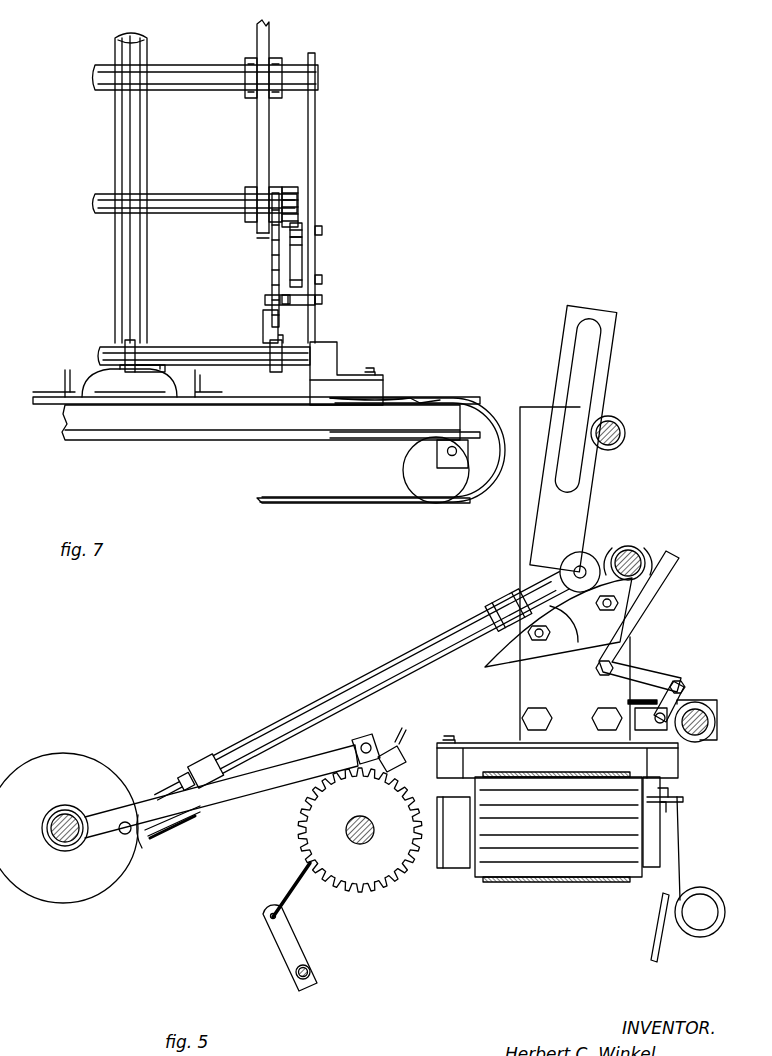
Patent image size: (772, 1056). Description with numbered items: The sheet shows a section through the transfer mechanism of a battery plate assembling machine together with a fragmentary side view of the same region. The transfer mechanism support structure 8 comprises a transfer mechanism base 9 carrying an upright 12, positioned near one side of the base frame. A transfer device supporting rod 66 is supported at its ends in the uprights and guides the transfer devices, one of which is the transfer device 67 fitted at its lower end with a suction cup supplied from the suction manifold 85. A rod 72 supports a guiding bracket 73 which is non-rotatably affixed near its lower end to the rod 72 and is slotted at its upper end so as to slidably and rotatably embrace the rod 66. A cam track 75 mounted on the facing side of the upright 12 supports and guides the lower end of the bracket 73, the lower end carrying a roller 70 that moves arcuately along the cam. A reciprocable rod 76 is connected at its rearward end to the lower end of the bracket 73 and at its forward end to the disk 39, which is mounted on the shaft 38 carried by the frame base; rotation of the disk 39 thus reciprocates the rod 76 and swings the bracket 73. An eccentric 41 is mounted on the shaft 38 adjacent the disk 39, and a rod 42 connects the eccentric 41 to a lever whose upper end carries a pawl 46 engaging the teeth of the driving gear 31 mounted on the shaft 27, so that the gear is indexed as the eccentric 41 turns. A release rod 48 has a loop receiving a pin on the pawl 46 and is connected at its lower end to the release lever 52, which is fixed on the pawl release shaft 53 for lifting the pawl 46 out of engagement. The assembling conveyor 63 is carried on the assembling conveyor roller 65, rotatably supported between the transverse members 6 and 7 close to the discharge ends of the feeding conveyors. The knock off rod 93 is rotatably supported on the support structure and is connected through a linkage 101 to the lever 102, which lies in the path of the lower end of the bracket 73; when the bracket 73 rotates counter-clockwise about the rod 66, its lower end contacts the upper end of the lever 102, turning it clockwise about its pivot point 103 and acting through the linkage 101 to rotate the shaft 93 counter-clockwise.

In FIG. 5, the transverse member 6 is at (400, 760).
In FIG. 5, the transverse member 7 is at (672, 756).
In FIG. 7, the transfer mechanism support structure 8 is at (320, 148).
In FIG. 5, the transfer mechanism support structure 8 is at (516, 540).
In FIG. 7, the transfer mechanism base 9 is at (372, 384).
In FIG. 7, the upright 12 is at (316, 116).
In FIG. 5, the upright 12 is at (548, 420).
In FIG. 5, the shaft 27 is at (370, 818).
In FIG. 5, the driving gear 31 is at (378, 862).
In FIG. 5, the shaft 38 is at (62, 812).
In FIG. 5, the disk 39 is at (66, 890).
In FIG. 5, the eccentric 41 is at (70, 846).
In FIG. 5, the rod 42 is at (258, 782).
In FIG. 5, the pawl 46 is at (433, 766).
In FIG. 5, the release rod 48 is at (293, 886).
In FIG. 5, the release lever 52 is at (288, 946).
In FIG. 5, the pawl release shaft 53 is at (312, 972).
In FIG. 7, the assembling conveyor 63 is at (448, 400).
In FIG. 5, the assembling conveyor 63 is at (533, 777).
In FIG. 7, the assembling conveyor roller 65 is at (460, 498).
In FIG. 5, the assembling conveyor roller 65 is at (492, 856).
In FIG. 7, the transfer device supporting rod 66 is at (183, 78).
In FIG. 5, the transfer device supporting rod 66 is at (622, 426).
In FIG. 7, the transfer device 67 is at (140, 152).
In FIG. 7, the roller 70 is at (300, 190).
In FIG. 7, the rod 72 is at (182, 202).
In FIG. 5, the rod 72 is at (640, 548).
In FIG. 7, the guiding bracket 73 is at (262, 146).
In FIG. 5, the guiding bracket 73 is at (627, 363).
In FIG. 7, the cam track 75 is at (304, 224).
In FIG. 5, the cam track 75 is at (556, 612).
In FIG. 5, the reciprocable rod 76 is at (326, 712).
In FIG. 5, the suction manifold 85 is at (706, 890).
In FIG. 7, the knock off rod 93 is at (178, 356).
In FIG. 5, the knock off rod 93 is at (700, 718).
In FIG. 7, the linkage 101 is at (296, 262).
In FIG. 5, the linkage 101 is at (665, 662).
In FIG. 7, the lever 102 is at (276, 260).
In FIG. 5, the lever 102 is at (665, 570).
In FIG. 5, the pivot point 103 is at (603, 675).